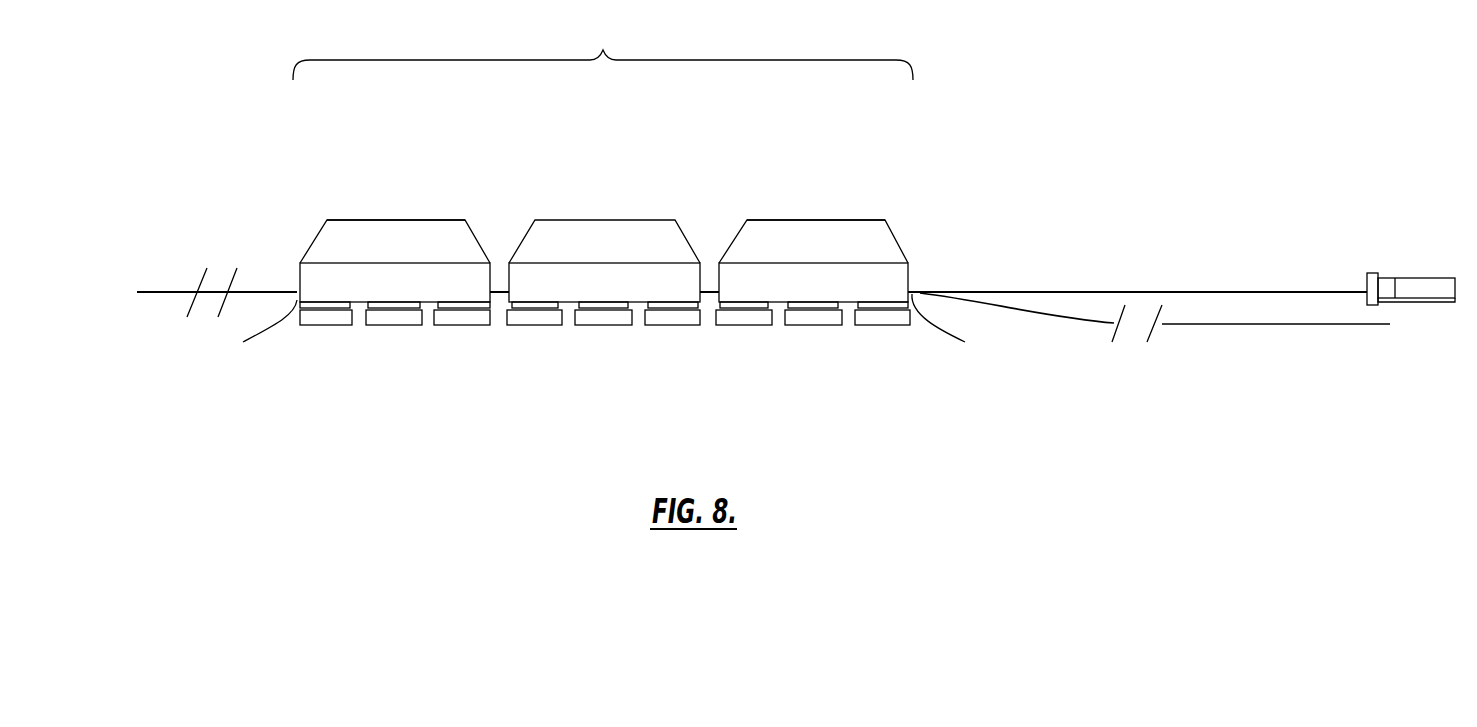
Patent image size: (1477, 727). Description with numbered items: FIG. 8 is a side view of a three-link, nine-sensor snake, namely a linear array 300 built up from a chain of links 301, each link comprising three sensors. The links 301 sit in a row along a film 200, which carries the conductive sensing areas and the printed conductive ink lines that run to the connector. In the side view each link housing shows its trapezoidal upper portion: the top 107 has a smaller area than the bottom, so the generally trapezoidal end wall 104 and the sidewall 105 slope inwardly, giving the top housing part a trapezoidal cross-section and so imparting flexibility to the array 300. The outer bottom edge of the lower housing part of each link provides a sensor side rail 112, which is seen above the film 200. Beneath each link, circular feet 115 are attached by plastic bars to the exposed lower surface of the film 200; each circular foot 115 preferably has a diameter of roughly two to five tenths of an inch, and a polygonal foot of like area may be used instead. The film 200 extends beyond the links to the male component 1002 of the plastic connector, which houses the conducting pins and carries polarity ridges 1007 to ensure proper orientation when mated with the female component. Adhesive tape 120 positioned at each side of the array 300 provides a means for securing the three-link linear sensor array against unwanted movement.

The linear array 300 is at (560, 203).
The sidewall 105 is at (325, 237).
The top 107 is at (400, 220).
The sensor side rail 112 is at (315, 283).
The circular foot 115 is at (322, 327).
The film 200 is at (502, 290).
The end wall 104 is at (735, 238).
The link 301 is at (825, 218).
The adhesive tape 120 is at (1198, 325).
The male component of connector 1002 is at (1425, 277).
The polarity ridge 1007 is at (1405, 305).